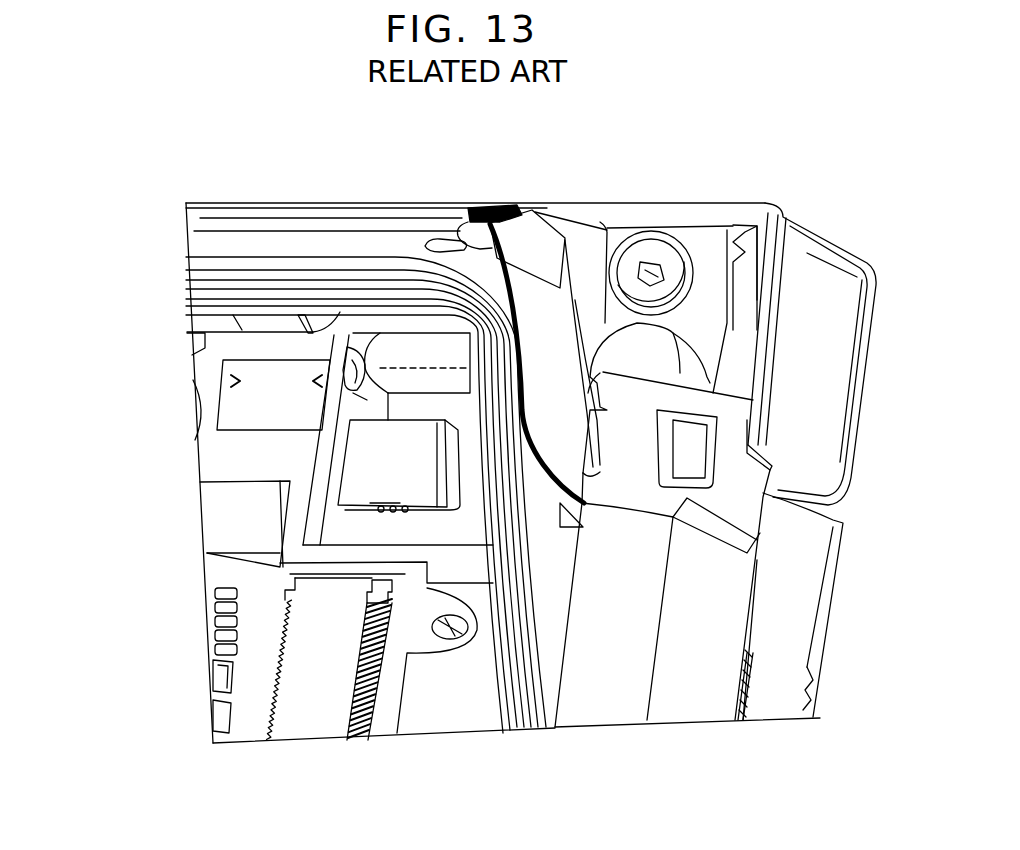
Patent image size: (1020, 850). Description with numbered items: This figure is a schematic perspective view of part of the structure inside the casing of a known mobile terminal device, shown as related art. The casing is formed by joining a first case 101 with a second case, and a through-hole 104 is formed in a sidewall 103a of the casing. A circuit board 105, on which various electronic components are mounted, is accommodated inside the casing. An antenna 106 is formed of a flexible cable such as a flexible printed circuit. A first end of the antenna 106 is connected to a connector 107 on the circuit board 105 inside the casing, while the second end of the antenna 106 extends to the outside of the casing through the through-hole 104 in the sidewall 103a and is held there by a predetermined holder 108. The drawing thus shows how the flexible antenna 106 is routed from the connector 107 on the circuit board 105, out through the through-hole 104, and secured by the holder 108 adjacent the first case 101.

The first case 101 is at (807, 240).
The sidewall 103a is at (229, 380).
The through-hole 104 is at (347, 363).
The circuit board 105 is at (342, 532).
The antenna 106 is at (402, 244).
The connector 107 is at (377, 473).
The holder 108 is at (498, 226).